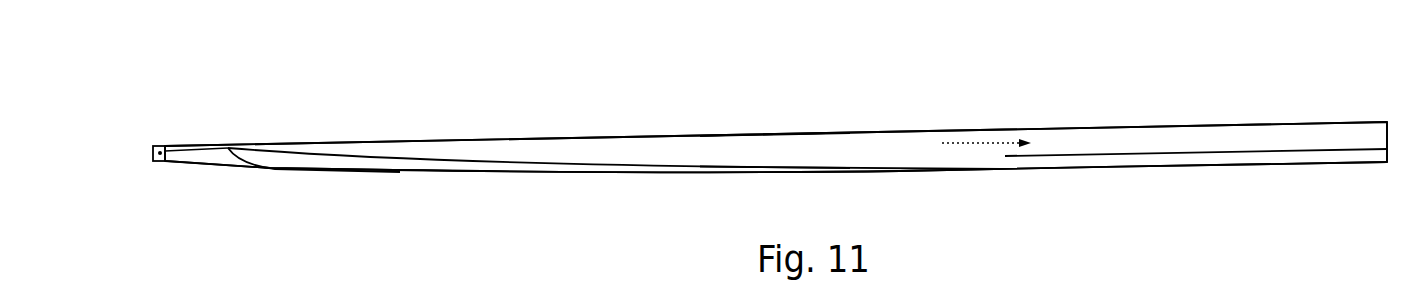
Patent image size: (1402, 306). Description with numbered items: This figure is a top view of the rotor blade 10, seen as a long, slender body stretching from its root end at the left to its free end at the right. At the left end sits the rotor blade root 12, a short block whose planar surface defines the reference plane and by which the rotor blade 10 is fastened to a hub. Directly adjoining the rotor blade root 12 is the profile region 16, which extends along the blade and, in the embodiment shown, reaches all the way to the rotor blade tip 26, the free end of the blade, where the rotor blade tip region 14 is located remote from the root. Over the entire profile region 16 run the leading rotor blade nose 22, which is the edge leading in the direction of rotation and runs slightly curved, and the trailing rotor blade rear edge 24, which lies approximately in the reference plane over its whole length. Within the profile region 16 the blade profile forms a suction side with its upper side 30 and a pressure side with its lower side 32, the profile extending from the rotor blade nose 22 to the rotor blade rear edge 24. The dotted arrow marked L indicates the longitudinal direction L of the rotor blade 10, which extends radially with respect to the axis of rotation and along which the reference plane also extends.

The rotor blade 10 is at (1146, 108).
The rotor blade root 12 is at (165, 146).
The rotor blade tip region 14 is at (1382, 106).
The profile region 16 is at (772, 148).
The rotor blade nose 22 is at (548, 169).
The rotor blade rear edge 24 is at (892, 132).
The rotor blade tip 26 is at (1382, 140).
The upper side 30 is at (370, 165).
The lower side 32 is at (629, 153).
The longitudinal direction L is at (985, 140).